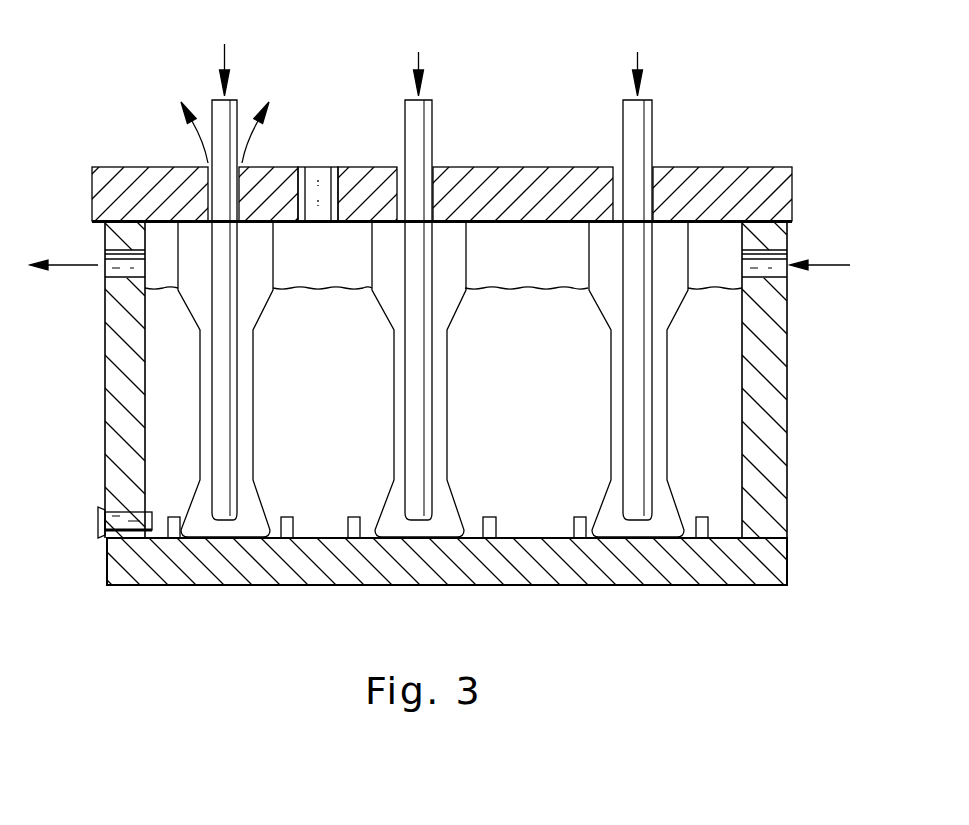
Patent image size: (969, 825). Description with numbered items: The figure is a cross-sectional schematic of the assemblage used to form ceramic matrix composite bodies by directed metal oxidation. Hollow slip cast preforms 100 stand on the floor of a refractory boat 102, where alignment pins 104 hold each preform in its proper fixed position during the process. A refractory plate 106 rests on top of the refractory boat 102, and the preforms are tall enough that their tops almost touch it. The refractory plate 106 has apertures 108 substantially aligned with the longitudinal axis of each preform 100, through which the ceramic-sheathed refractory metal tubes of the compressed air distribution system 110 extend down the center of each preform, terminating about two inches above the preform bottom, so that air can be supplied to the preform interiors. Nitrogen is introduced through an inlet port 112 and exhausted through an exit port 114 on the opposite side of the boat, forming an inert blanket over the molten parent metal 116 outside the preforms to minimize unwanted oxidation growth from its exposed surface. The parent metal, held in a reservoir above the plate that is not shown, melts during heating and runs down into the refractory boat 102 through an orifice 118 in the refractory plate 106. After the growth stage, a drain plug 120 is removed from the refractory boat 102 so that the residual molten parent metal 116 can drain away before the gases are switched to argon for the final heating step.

The hollow slip cast preform 100 is at (670, 417).
The refractory boat 102 is at (747, 563).
The alignment pin 104 is at (710, 520).
The refractory plate 106 is at (148, 180).
The aperture 108 is at (434, 176).
The compressed air distribution system 110 is at (405, 130).
The inlet port 112 is at (773, 266).
The exit port 114 is at (103, 272).
The molten parent metal 116 is at (165, 368).
The orifice 118 is at (322, 173).
The drain plug 120 is at (98, 521).